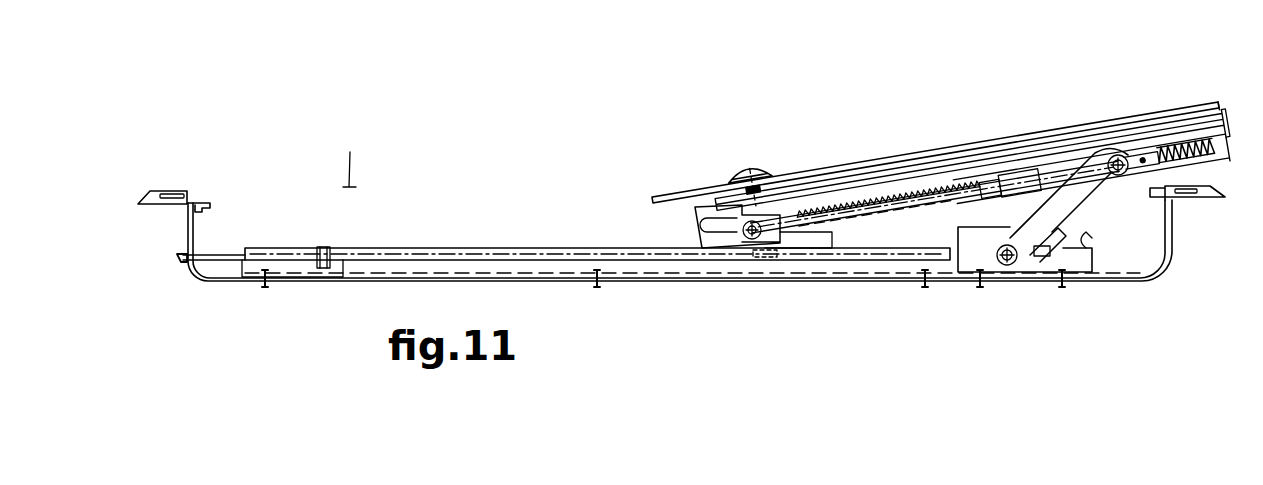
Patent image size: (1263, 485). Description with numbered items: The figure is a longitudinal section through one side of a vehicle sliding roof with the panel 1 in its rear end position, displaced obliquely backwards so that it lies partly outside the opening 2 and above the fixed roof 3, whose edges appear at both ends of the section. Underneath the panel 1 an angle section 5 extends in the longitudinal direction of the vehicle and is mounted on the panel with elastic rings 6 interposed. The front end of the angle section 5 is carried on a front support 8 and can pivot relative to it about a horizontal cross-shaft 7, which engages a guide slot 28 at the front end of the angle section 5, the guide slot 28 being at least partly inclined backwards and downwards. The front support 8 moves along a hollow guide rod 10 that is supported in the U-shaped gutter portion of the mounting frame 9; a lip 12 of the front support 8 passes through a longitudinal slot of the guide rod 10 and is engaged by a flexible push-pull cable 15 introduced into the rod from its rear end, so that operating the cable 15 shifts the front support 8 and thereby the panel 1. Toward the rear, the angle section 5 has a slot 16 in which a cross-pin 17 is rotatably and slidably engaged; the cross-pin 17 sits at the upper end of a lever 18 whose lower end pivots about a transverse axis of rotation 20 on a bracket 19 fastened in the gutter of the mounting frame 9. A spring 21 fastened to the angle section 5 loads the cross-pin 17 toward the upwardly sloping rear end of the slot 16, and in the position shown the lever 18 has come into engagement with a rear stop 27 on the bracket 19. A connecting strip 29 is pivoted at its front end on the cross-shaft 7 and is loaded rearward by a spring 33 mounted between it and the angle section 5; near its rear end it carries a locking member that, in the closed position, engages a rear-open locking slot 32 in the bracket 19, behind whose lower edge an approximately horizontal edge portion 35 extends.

The panel 1 is at (947, 148).
The opening 2 is at (348, 155).
The fixed roof 3 is at (158, 202).
The angle section 5 is at (995, 168).
The elastic rings 6 is at (787, 185).
The cross-shaft 7 is at (741, 216).
The front support 8 is at (800, 240).
The mounting frame 9 is at (207, 279).
The hollow guide rod 10 is at (437, 250).
The lip 12 is at (775, 262).
The push-pull cables 15 is at (183, 262).
The slot 16 is at (1214, 148).
The cross-pin 17 is at (1117, 155).
The lever 18 is at (1090, 163).
The bracket 19 is at (970, 258).
The axis of rotation 20 is at (1007, 266).
The spring 21 is at (1172, 150).
The rear stop 27 is at (1058, 232).
The guide slot 28 is at (708, 220).
The connecting strip 29 is at (1232, 133).
The locking slot 32 is at (1042, 258).
The spring 33 is at (885, 197).
The edge portion 35 is at (1085, 240).